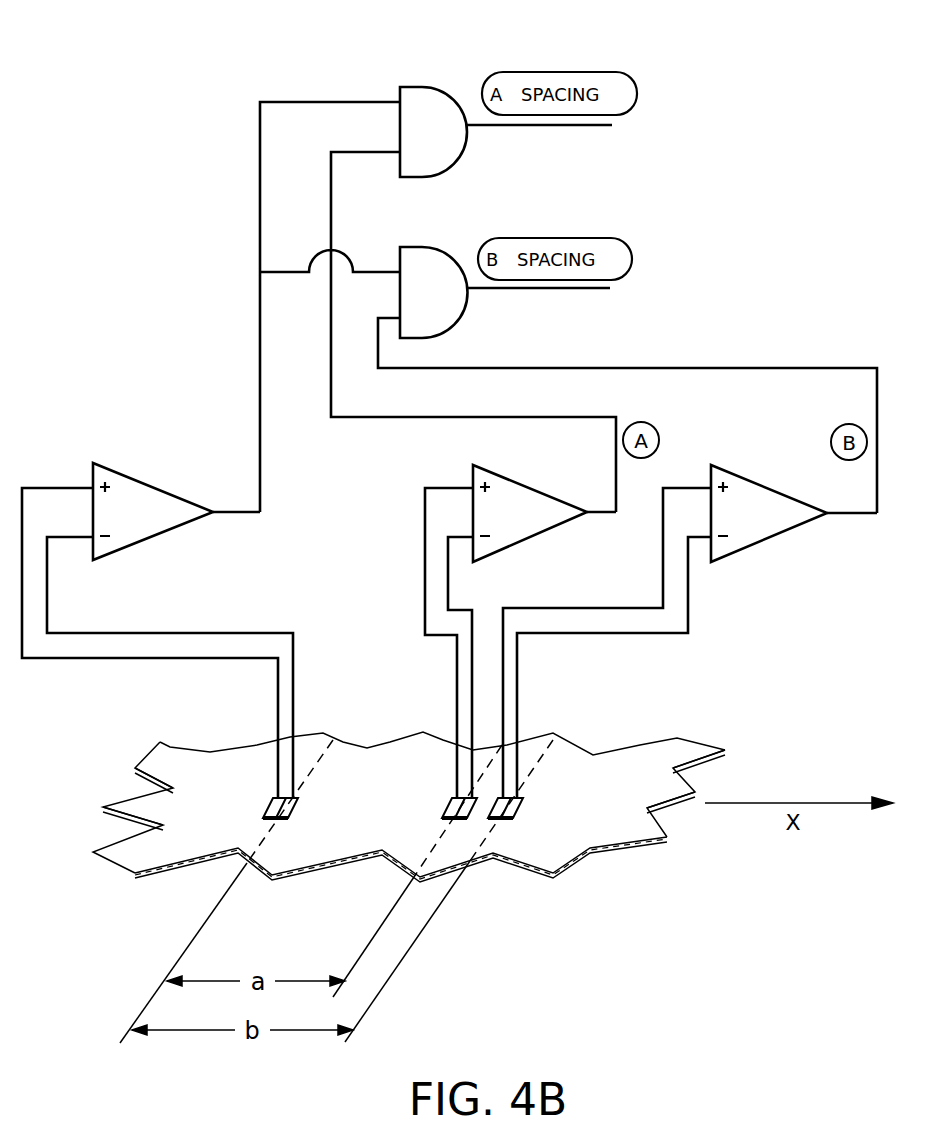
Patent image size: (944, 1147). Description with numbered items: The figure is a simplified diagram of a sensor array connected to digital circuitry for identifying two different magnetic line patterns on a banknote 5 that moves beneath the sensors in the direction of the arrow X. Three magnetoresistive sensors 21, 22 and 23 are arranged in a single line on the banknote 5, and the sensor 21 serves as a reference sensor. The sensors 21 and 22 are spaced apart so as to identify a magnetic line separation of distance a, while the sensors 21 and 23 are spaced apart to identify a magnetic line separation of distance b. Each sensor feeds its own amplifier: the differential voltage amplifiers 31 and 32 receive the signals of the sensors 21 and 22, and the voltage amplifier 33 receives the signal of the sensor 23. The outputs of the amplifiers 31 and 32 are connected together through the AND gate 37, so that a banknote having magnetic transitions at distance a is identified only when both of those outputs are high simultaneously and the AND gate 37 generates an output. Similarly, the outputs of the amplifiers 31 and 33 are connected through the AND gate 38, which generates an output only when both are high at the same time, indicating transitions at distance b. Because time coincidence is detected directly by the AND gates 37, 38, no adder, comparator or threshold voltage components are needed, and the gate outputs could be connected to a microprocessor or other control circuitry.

The banknote 5 is at (180, 760).
The magnetoresistive sensor 21 is at (273, 798).
The magnetoresistive sensor 22 is at (450, 797).
The magnetoresistive sensor 23 is at (560, 745).
The differential voltage amplifier 31 is at (143, 490).
The differential voltage amplifier 32 is at (530, 490).
The voltage amplifier 33 is at (753, 485).
The AND gate 37 is at (417, 87).
The AND gate 38 is at (422, 255).